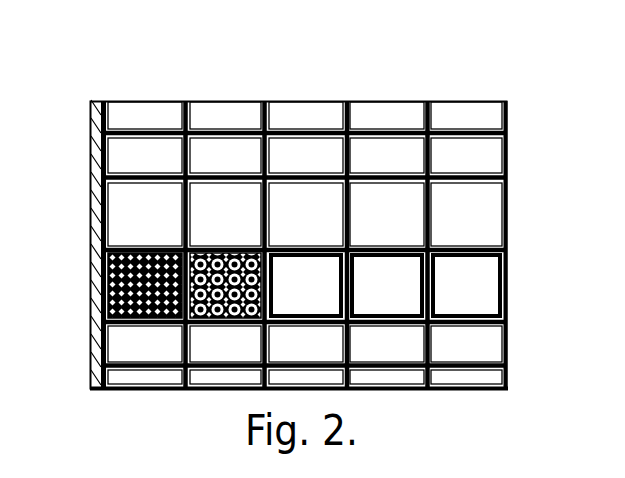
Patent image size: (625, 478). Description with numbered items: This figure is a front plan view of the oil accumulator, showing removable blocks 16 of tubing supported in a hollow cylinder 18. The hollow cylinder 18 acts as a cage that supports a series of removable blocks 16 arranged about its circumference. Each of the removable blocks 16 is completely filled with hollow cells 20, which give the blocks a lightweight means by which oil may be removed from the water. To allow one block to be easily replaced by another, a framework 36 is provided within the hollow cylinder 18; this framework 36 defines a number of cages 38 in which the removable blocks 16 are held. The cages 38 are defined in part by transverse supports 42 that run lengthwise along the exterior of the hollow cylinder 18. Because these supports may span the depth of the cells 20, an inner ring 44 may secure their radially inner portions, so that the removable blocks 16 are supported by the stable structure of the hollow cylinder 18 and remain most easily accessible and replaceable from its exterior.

The hollow cylinder 18 is at (112, 93).
The hollow cells 20 is at (105, 325).
The inner ring 44 is at (332, 112).
The transverse supports 42 is at (468, 130).
The cages 38 is at (485, 208).
The framework 36 is at (442, 297).
The removable blocks 16 is at (133, 253).